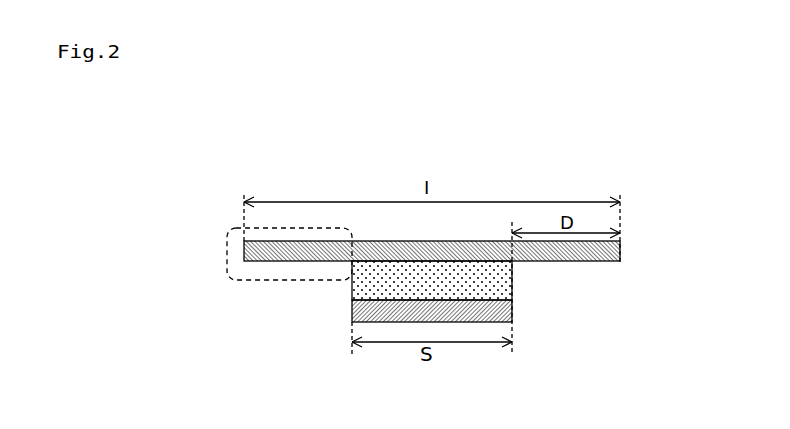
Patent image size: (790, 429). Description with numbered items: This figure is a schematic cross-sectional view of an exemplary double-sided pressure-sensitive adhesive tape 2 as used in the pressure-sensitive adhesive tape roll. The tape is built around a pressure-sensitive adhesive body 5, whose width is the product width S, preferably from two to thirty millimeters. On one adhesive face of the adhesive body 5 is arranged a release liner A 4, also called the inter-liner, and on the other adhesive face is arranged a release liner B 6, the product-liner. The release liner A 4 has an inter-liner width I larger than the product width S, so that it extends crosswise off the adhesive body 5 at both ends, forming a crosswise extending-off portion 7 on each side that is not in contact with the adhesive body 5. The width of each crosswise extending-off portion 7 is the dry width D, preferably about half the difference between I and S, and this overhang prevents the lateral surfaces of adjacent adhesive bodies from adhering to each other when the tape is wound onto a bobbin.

The double-sided pressure-sensitive adhesive tape 2 is at (533, 173).
The release liner A 4 is at (570, 257).
The pressure-sensitive adhesive body 5 is at (505, 285).
The release liner B 6 is at (503, 313).
The crosswise extending-off portion 7 is at (270, 273).